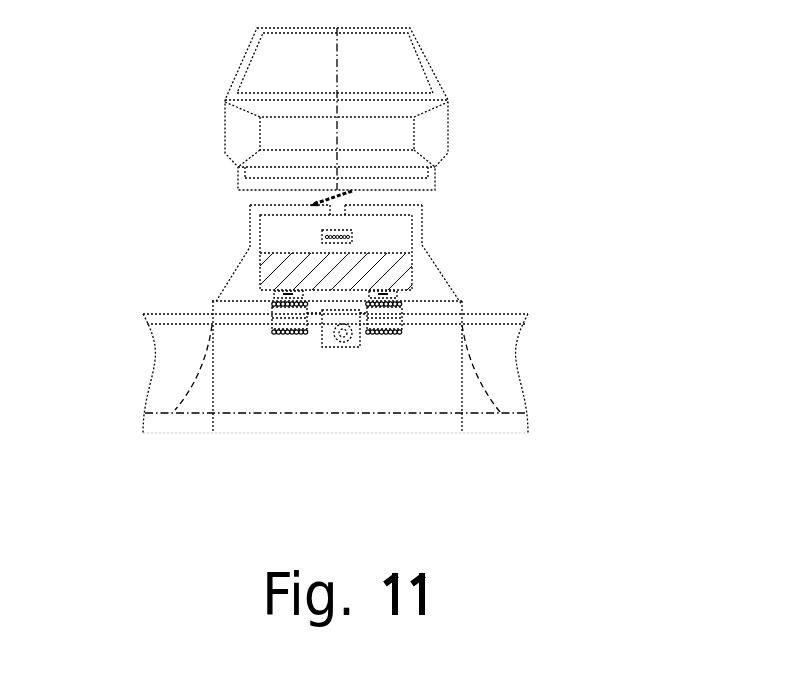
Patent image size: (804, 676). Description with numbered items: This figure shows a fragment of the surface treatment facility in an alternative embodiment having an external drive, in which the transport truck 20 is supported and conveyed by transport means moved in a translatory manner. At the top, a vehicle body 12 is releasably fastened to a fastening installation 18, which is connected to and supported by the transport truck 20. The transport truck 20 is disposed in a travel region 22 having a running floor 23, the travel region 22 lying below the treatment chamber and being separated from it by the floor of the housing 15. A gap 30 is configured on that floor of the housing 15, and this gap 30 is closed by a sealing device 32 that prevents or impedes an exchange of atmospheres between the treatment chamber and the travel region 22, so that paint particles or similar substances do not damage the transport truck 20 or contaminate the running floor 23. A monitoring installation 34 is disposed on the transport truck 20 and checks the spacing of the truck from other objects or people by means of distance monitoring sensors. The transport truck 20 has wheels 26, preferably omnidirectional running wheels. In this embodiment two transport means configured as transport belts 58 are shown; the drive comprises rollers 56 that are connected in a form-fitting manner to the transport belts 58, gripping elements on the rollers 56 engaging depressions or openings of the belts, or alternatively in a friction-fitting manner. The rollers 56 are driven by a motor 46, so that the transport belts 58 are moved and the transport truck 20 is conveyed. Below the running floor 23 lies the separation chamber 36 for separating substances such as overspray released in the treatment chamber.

The vehicle body 12 is at (427, 53).
The sealing device 32 is at (332, 196).
The fastening installation 18 is at (350, 248).
The gap 30 is at (362, 216).
The housing 15 is at (238, 258).
The travel region 22 is at (437, 290).
The monitoring installation 34 is at (322, 238).
The transport truck 20 is at (412, 273).
The running floor 23 is at (232, 297).
The wheel 26 is at (342, 348).
The roller 56 is at (308, 313).
The transport belt 58 is at (287, 334).
The motor 46 is at (343, 347).
The separation chamber 36 is at (130, 382).